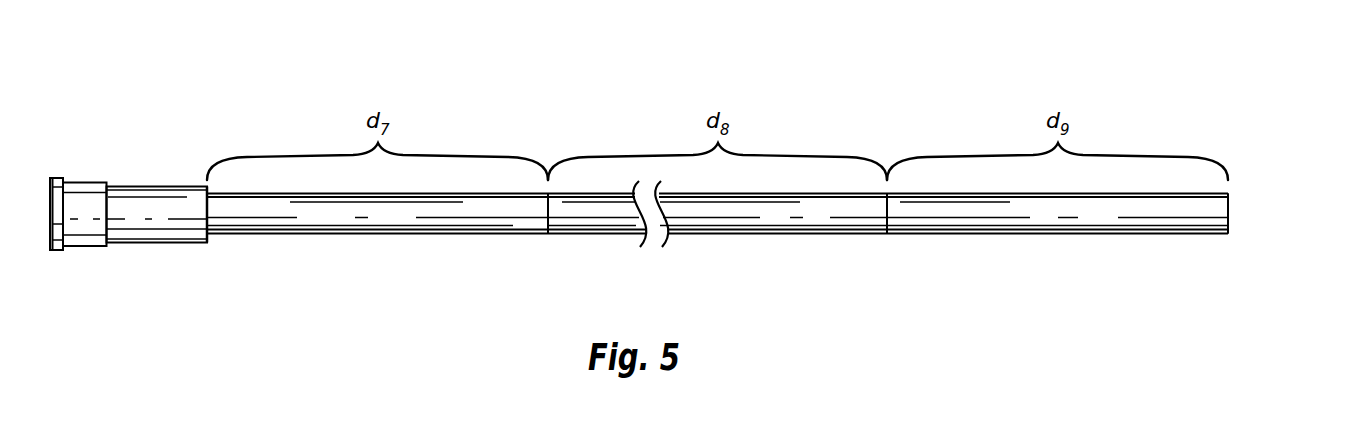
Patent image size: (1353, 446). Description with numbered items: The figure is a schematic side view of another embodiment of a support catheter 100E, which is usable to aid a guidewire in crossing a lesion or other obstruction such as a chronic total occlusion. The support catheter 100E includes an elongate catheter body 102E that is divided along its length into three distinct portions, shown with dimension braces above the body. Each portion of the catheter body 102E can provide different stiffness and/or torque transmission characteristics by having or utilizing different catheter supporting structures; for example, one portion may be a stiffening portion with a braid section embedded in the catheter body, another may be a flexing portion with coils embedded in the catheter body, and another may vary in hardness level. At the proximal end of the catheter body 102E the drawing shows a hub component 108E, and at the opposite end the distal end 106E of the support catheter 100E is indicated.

The support catheter 100E is at (228, 151).
The connector hub 108E is at (213, 247).
The catheter body 102E is at (818, 234).
The distal end of shaft 106E is at (1236, 241).